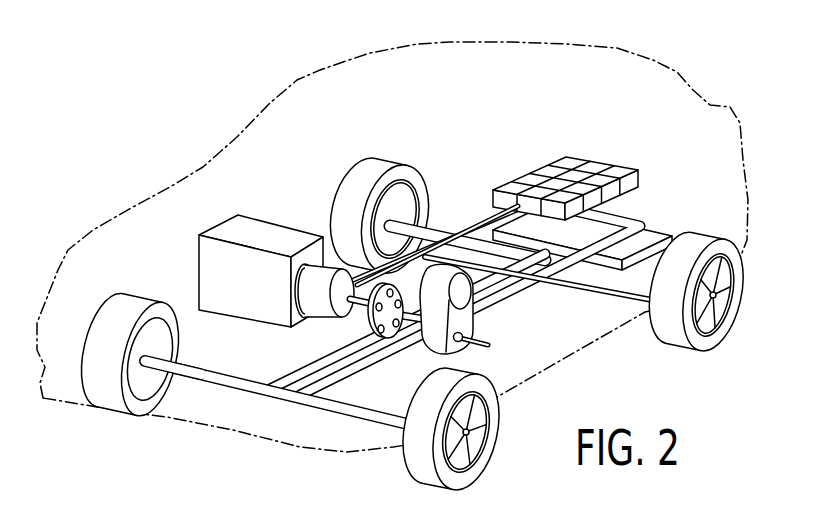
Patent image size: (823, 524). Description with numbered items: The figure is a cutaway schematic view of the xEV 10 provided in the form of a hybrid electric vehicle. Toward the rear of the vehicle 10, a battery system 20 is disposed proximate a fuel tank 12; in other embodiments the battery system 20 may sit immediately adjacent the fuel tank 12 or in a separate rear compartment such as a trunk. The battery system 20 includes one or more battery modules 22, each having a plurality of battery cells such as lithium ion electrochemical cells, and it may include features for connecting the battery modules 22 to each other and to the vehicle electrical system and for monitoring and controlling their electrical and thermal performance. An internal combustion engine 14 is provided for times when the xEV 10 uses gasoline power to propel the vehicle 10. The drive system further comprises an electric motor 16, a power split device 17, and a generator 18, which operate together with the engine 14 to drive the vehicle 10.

The xEV 10 is at (674, 60).
The fuel tank 12 is at (657, 227).
The internal combustion engine 14 is at (232, 230).
The electric motor 16 is at (323, 277).
The power split device 17 is at (370, 323).
The generator 18 is at (476, 326).
The battery system 20 is at (579, 165).
The battery modules 22 is at (612, 163).